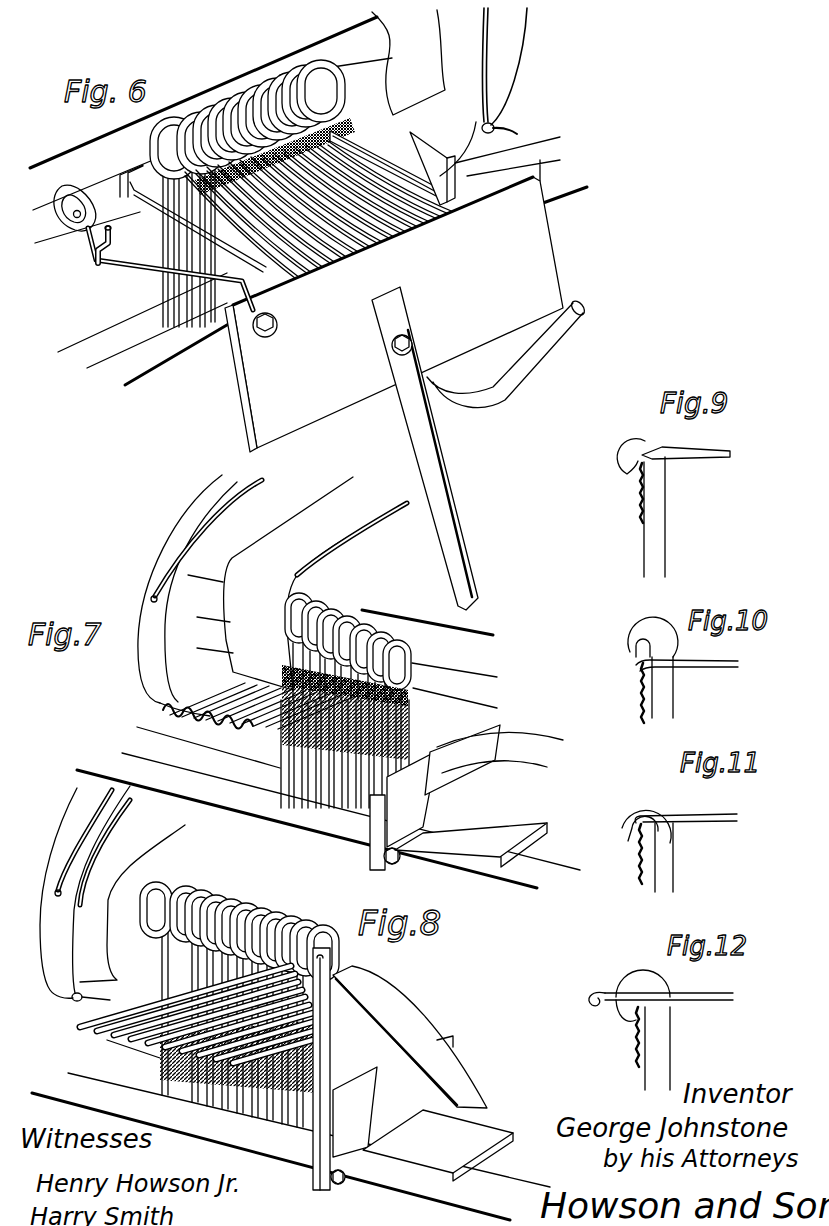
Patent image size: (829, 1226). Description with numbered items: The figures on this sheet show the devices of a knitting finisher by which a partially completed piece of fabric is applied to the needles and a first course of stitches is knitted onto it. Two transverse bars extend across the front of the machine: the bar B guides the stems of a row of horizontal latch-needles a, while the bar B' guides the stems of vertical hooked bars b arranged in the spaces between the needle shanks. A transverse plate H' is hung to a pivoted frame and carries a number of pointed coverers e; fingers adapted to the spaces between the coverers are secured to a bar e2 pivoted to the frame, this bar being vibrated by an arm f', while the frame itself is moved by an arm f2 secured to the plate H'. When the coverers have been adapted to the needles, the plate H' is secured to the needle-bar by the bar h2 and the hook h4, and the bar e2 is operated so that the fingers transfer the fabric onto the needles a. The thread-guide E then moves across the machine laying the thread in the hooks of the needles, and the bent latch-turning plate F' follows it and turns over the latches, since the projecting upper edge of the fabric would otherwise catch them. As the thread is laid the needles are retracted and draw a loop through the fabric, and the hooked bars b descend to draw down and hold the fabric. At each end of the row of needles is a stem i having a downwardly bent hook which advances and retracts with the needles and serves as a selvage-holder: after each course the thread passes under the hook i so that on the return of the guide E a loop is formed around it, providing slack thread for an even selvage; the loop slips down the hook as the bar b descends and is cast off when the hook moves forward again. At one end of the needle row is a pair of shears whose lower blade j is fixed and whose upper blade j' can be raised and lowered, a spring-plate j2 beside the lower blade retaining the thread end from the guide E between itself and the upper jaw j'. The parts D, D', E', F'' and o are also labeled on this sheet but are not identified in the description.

In FIG. 6, the needle bar rail D is at (211, 113).
In FIG. 7, the needle bar rail D is at (427, 639).
In FIG. 6, the transverse bar B is at (89, 204).
In FIG. 7, the transverse bar B is at (454, 685).
In FIG. 6, the hooked bars b is at (254, 193).
In FIG. 7, the hooked bars b is at (346, 700).
In FIG. 8, the hooked bars b is at (239, 1004).
In FIG. 9, the hooked bars b is at (641, 508).
In FIG. 10, the hooked bars b is at (653, 670).
In FIG. 11, the hooked bars b is at (647, 851).
In FIG. 12, the hooked bars b is at (643, 1030).
In FIG. 6, the hooked stem i is at (198, 227).
In FIG. 7, the hooked stem i is at (248, 709).
In FIG. 8, the hooked stem i is at (187, 1014).
In FIG. 10, the hooked stem i is at (687, 672).
In FIG. 11, the hooked stem i is at (686, 827).
In FIG. 12, the hooked stem i is at (661, 1007).
In FIG. 6, the hook h4 is at (116, 238).
In FIG. 6, the hooked arm h2 is at (153, 247).
In FIG. 6, the coverers e is at (320, 211).
In FIG. 6, the bar e2 is at (361, 246).
In FIG. 6, the transverse plate H' is at (394, 314).
In FIG. 6, the upper blade j' is at (385, 164).
In FIG. 7, the upper blade j' is at (462, 760).
In FIG. 8, the upper blade j' is at (410, 1037).
In FIG. 6, the spring-plate j2 is at (443, 163).
In FIG. 7, the spring-plate j2 is at (402, 811).
In FIG. 8, the spring-plate j2 is at (345, 1069).
In FIG. 6, the thread-guide E is at (504, 71).
In FIG. 7, the thread-guide E is at (199, 595).
In FIG. 6, the thread guide plate F' is at (408, 62).
In FIG. 7, the thread guide plate F' is at (297, 583).
In FIG. 6, the arm f' is at (507, 353).
In FIG. 6, the arm f2 is at (425, 448).
In FIG. 7, the latch-needles a is at (289, 721).
In FIG. 8, the latch-needles a is at (133, 1040).
In FIG. 9, the latch-needles a is at (686, 463).
In FIG. 7, the transverse bar B' is at (351, 809).
In FIG. 8, the transverse bar B' is at (309, 1121).
In FIG. 7, the bed rail D' is at (307, 829).
In FIG. 8, the bed rail D' is at (271, 1156).
In FIG. 7, the spring o is at (500, 752).
In FIG. 8, the spring o is at (442, 1053).
In FIG. 7, the lower blade j is at (471, 827).
In FIG. 8, the lower blade j is at (438, 1129).
In FIG. 8, the thread loop E' is at (85, 893).
In FIG. 8, the thread guide F'' is at (131, 891).